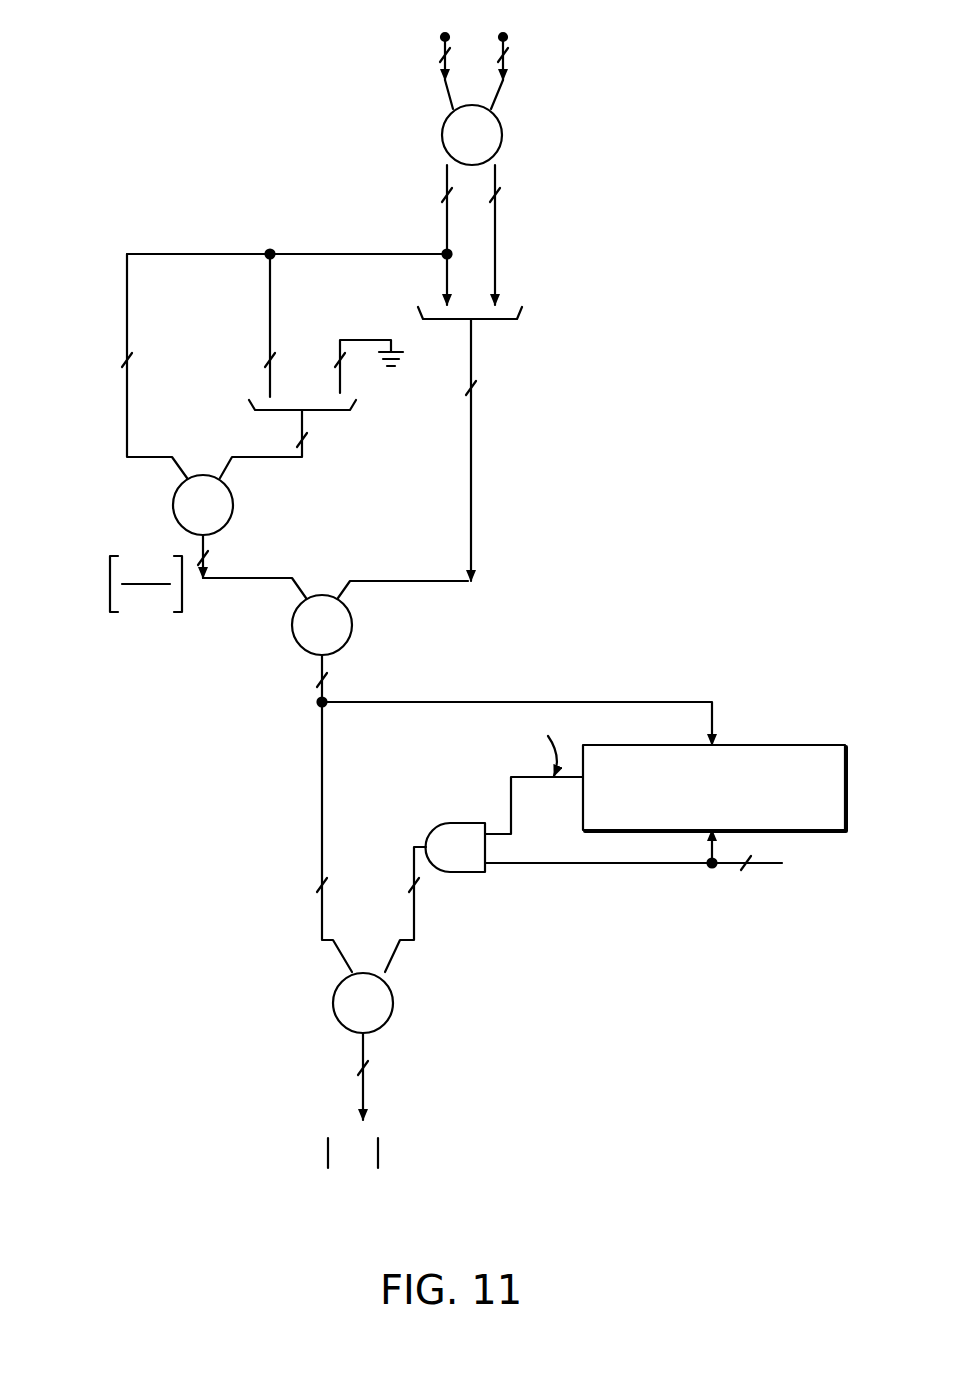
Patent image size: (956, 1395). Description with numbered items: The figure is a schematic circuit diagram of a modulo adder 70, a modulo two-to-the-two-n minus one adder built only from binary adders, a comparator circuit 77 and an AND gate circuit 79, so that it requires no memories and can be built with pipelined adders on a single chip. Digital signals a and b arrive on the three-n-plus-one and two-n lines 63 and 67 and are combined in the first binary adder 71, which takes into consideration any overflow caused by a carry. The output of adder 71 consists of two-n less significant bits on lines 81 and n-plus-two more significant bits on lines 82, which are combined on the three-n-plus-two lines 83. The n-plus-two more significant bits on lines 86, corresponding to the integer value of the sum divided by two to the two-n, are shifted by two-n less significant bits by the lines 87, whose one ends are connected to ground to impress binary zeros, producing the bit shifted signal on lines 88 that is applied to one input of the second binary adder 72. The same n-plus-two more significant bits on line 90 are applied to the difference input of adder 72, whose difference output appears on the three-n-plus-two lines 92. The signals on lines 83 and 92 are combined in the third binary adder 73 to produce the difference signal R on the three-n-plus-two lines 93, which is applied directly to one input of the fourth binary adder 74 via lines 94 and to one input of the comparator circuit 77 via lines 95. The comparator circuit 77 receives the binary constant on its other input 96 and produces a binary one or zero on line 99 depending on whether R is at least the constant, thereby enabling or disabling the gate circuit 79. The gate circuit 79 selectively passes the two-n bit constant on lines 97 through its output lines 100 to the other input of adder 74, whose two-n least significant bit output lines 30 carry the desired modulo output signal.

The output lines 30 is at (360, 1094).
The 3n+1 lines 63 is at (442, 66).
The 2n lines 67 is at (500, 66).
The modulo adder 70 is at (670, 226).
The first binary adder 71 is at (502, 142).
The second binary adder 72 is at (232, 526).
The third binary adder 73 is at (352, 638).
The fourth binary adder 74 is at (393, 1016).
The comparator circuit 77 is at (806, 745).
The gate circuit 79 is at (462, 822).
The lines for 2n less significant bits 81 is at (497, 254).
The lines for n+2 more significant bits 82 is at (446, 240).
The 3n+2 lines 83 is at (472, 486).
The lines for n+2 more significant bits 86 is at (270, 330).
The grounded lines 87 is at (372, 338).
The bit shifted signal lines 88 is at (302, 456).
The line for n+2 more significant bits 90 is at (127, 323).
The 3n+2 lines 92 is at (260, 584).
The 3n+2 lines 93 is at (320, 682).
The 3n+2 bit line to adder 74 94 is at (321, 806).
The line to comparator 95 is at (574, 700).
The comparator input 96 is at (710, 856).
The 2n bit lines 97 is at (620, 866).
The comparator output line 99 is at (511, 792).
The AND gate output line (2n bits) 100 is at (412, 851).